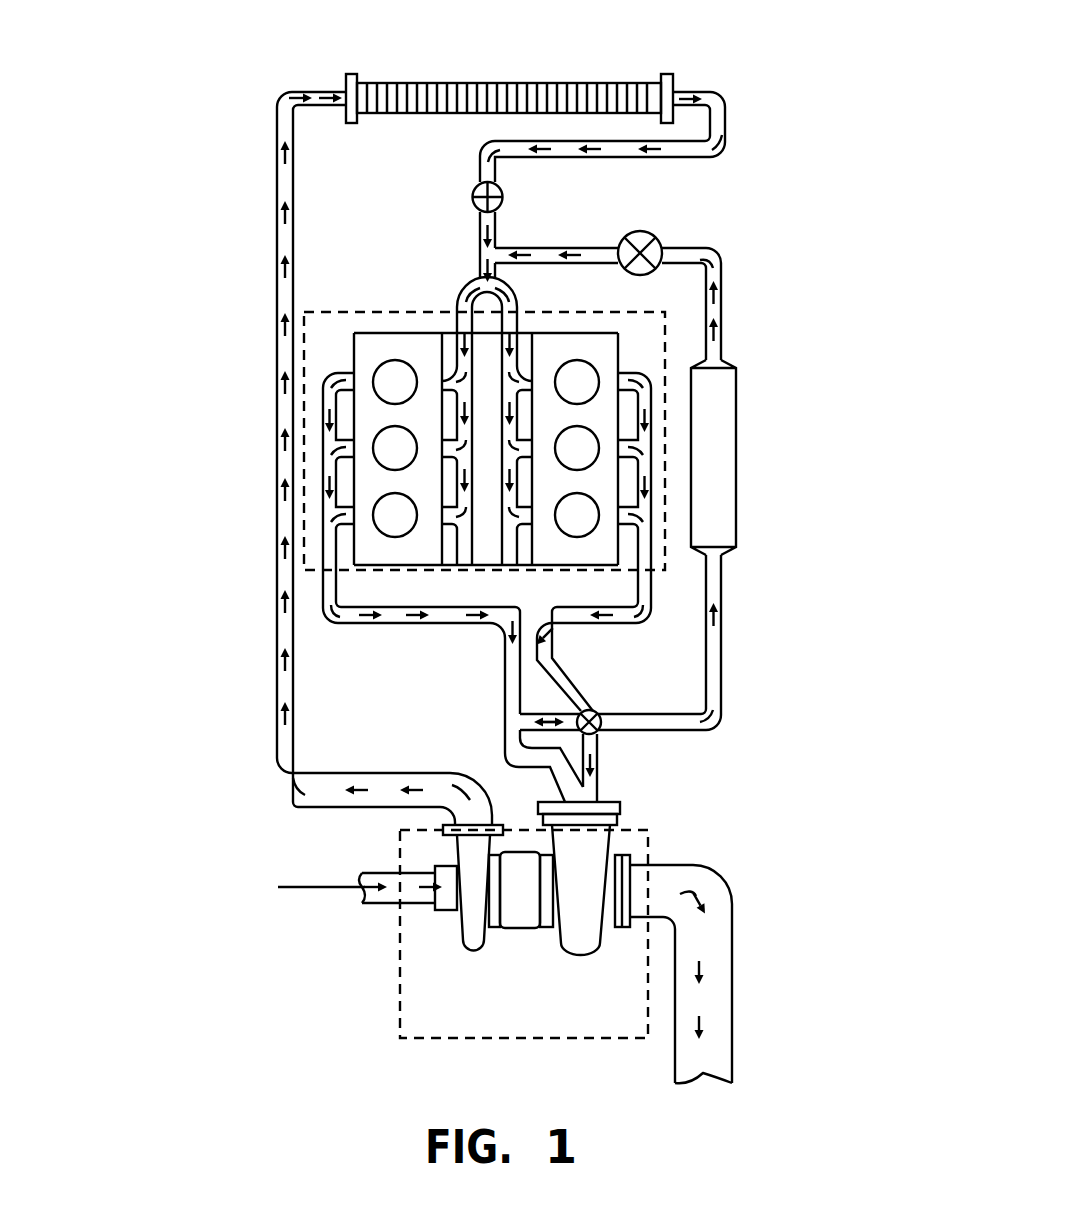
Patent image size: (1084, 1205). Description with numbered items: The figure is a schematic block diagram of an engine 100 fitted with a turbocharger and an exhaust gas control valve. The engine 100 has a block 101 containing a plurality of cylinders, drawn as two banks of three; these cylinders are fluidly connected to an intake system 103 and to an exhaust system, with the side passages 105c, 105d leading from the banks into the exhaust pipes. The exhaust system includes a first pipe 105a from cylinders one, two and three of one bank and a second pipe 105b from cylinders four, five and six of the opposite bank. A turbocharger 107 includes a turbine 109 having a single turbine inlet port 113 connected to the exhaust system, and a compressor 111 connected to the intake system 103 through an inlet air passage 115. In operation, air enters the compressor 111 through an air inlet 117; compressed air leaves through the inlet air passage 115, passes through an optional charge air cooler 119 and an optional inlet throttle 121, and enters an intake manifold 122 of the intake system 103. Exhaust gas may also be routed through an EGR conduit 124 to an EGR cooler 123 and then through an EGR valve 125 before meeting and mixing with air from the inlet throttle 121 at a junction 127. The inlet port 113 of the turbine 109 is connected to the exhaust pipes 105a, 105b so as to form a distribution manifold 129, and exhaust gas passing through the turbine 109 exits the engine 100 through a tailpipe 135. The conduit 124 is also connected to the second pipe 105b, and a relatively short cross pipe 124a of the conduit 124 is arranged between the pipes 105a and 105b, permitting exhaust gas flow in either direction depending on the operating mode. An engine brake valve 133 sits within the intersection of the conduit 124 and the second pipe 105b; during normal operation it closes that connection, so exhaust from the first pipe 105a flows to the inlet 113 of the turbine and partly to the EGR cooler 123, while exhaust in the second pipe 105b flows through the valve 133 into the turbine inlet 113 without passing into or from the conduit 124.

The engine 100 is at (233, 704).
The block 101 is at (387, 311).
The intake system 103 is at (530, 287).
The first pipe 105a is at (427, 625).
The second pipe 105b is at (596, 628).
The coolant passage 105c is at (338, 512).
The coolant passage 105d is at (634, 512).
The turbocharger 107 is at (545, 1038).
The turbine 109 is at (580, 957).
The compressor 111 is at (471, 953).
The turbine inlet port 113 is at (612, 811).
The inlet air passage 115 is at (276, 380).
The air inlet 117 is at (372, 905).
The charge air cooler 119 is at (405, 115).
The inlet throttle 121 is at (474, 190).
The intake manifold 122 is at (478, 250).
The EGR cooler 123 is at (737, 468).
The EGR conduit 124 is at (730, 737).
The cross pipe 124a is at (548, 713).
The EGR valve 125 is at (656, 238).
The junction 127 is at (531, 215).
The distribution manifold 129 is at (618, 757).
The engine brake valve 133 is at (598, 713).
The tailpipe 135 is at (733, 1000).